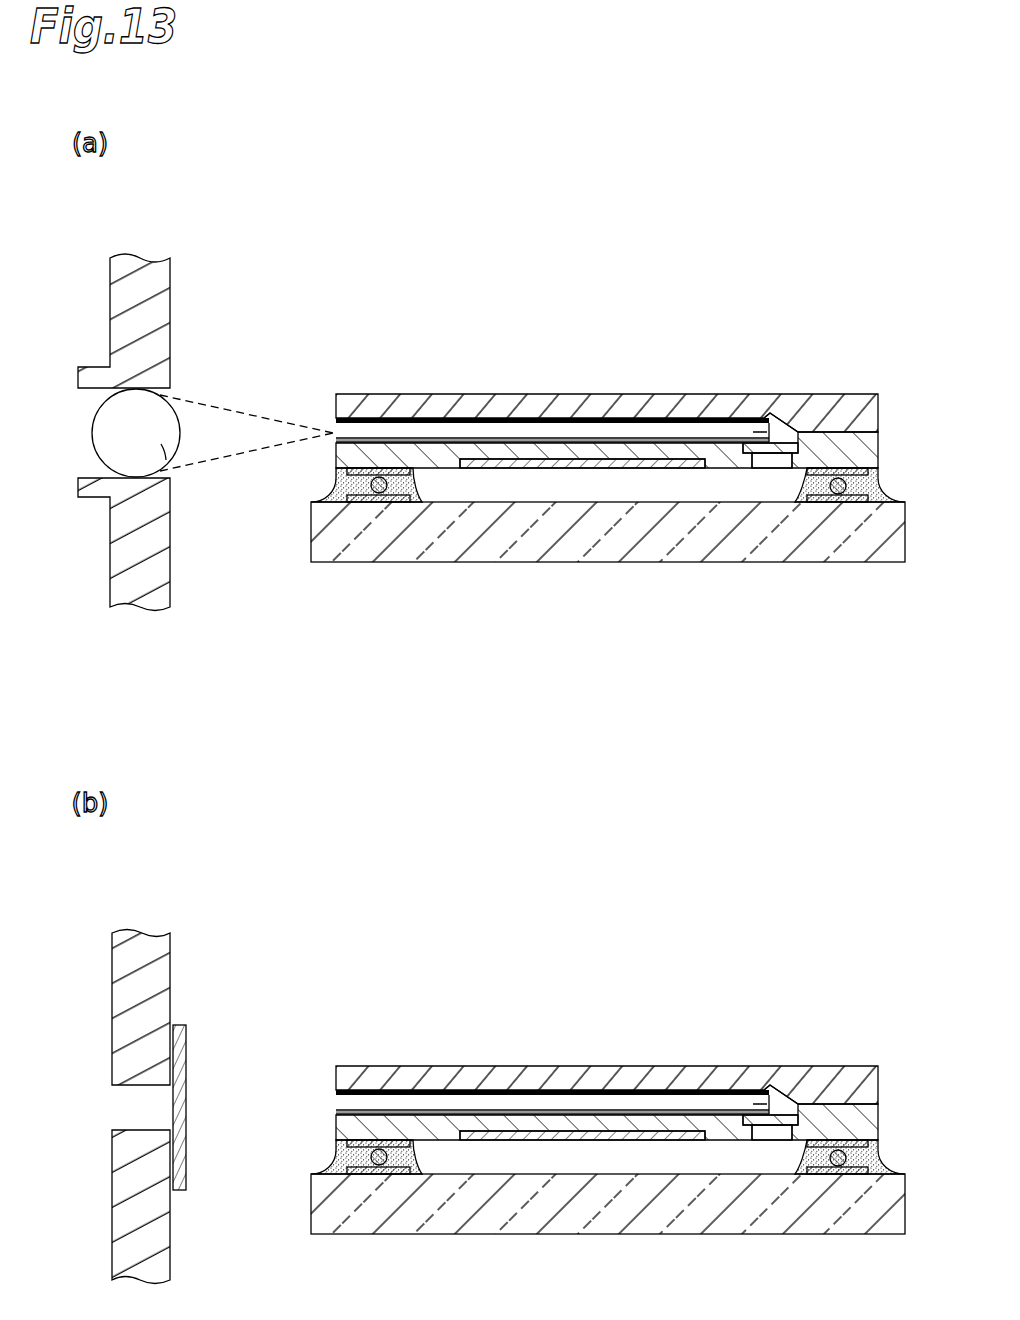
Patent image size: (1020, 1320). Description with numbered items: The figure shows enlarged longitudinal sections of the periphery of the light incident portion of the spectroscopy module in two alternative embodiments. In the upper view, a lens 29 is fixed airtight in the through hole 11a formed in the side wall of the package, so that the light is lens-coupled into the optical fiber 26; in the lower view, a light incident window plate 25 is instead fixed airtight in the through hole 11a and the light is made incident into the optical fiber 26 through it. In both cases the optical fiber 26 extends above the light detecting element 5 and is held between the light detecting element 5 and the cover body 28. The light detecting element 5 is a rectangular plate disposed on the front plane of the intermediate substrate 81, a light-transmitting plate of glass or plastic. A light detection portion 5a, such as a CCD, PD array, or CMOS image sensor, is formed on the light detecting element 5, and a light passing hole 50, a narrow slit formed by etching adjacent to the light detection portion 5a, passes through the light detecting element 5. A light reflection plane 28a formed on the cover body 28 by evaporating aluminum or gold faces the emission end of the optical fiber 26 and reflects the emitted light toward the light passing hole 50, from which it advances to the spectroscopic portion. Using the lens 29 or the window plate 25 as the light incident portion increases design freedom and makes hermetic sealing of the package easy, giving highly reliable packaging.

The through hole 11a is at (138, 393).
The lens 29 is at (160, 438).
The light incident window plate 25 is at (185, 1110).
The cover body 28 is at (619, 405).
The light reflection plane 28a is at (783, 433).
The optical fiber 26 is at (510, 432).
The light detecting element 5 is at (873, 447).
The light detection portion 5a is at (579, 470).
The light passing hole 50 is at (774, 453).
The intermediate substrate 81 is at (338, 535).